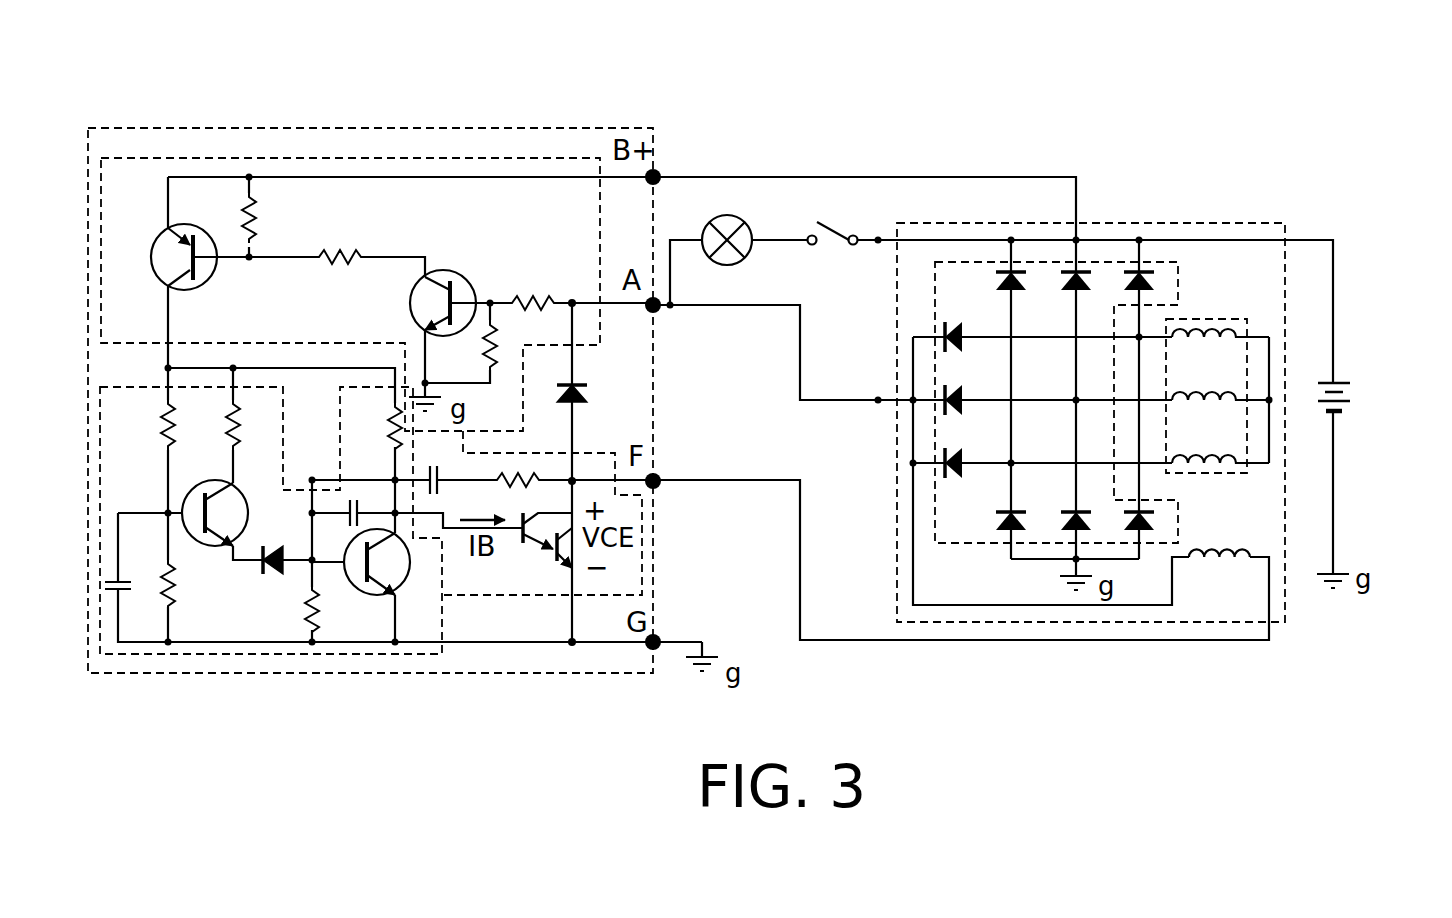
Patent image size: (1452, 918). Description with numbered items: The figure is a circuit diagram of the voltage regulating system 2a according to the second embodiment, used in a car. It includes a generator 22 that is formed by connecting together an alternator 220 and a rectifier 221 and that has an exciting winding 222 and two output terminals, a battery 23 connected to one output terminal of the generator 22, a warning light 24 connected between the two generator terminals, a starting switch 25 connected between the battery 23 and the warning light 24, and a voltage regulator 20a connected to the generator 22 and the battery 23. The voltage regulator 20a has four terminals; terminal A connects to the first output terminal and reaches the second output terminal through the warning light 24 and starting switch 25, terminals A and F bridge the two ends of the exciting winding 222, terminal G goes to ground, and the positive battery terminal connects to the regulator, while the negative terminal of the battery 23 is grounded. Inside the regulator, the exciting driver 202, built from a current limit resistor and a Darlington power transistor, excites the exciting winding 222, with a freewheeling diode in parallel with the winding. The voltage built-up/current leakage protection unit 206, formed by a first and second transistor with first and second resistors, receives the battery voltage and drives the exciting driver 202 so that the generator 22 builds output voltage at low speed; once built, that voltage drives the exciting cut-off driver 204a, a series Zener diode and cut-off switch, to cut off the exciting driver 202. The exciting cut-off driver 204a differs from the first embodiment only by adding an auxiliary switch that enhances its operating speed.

The voltage regulator 20a is at (372, 128).
The voltage built-up/current leakage protection unit 206 is at (145, 155).
The exciting driver 202 is at (548, 597).
The exciting cut-off driver 204a is at (227, 655).
The voltage regulating system 2a is at (1244, 94).
The generator 22 is at (1178, 223).
The rectifier 221 is at (1150, 545).
The alternator 220 is at (1247, 320).
The exciting winding 222 is at (1245, 557).
The battery 23 is at (1345, 380).
The warning light 24 is at (730, 215).
The starting switch 25 is at (830, 220).